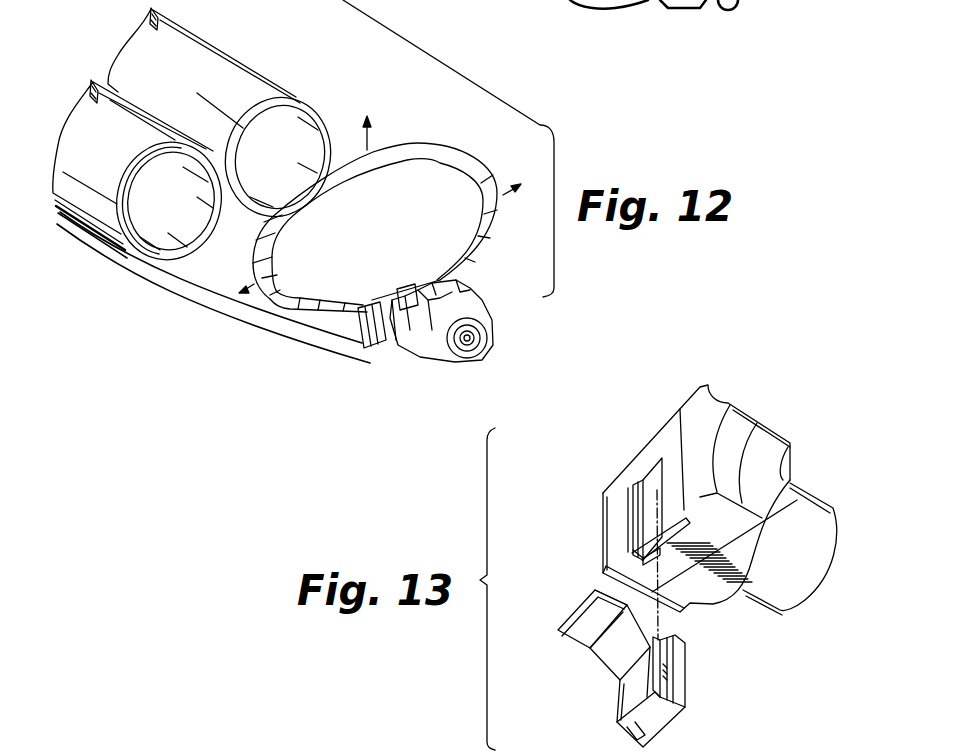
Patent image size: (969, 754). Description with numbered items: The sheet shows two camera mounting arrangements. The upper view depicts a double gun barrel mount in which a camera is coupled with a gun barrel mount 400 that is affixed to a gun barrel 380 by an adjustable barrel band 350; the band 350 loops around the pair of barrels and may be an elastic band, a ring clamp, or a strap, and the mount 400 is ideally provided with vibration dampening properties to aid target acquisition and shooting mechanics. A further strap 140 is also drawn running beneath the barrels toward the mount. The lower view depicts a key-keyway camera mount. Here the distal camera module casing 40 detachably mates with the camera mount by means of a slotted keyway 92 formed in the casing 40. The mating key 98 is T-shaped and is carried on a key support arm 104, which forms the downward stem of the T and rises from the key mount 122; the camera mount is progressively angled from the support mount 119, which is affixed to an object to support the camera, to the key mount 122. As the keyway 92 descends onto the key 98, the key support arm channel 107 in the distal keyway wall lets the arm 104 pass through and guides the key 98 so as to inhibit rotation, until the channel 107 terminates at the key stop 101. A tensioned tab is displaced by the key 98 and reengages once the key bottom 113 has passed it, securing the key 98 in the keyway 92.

In FIG. 12, the gun barrel 380 is at (306, 84).
In FIG. 12, the adjustable barrel band 350 is at (419, 144).
In FIG. 12, the gun barrel mount 400 is at (378, 295).
In FIG. 12, the distal camera module casing 40 is at (487, 303).
In FIG. 13, the distal camera module casing 40 is at (799, 400).
In FIG. 12, the strap 140 is at (213, 299).
In FIG. 13, the slotted keyway 92 is at (652, 524).
In FIG. 13, the key stop 101 is at (649, 462).
In FIG. 13, the key support arm channel 107 is at (630, 503).
In FIG. 13, the support mount 119 is at (574, 613).
In FIG. 13, the key mount 122 is at (561, 689).
In FIG. 13, the key support arm 104 is at (640, 717).
In FIG. 13, the key 98 is at (684, 663).
In FIG. 13, the key bottom 113 is at (680, 712).